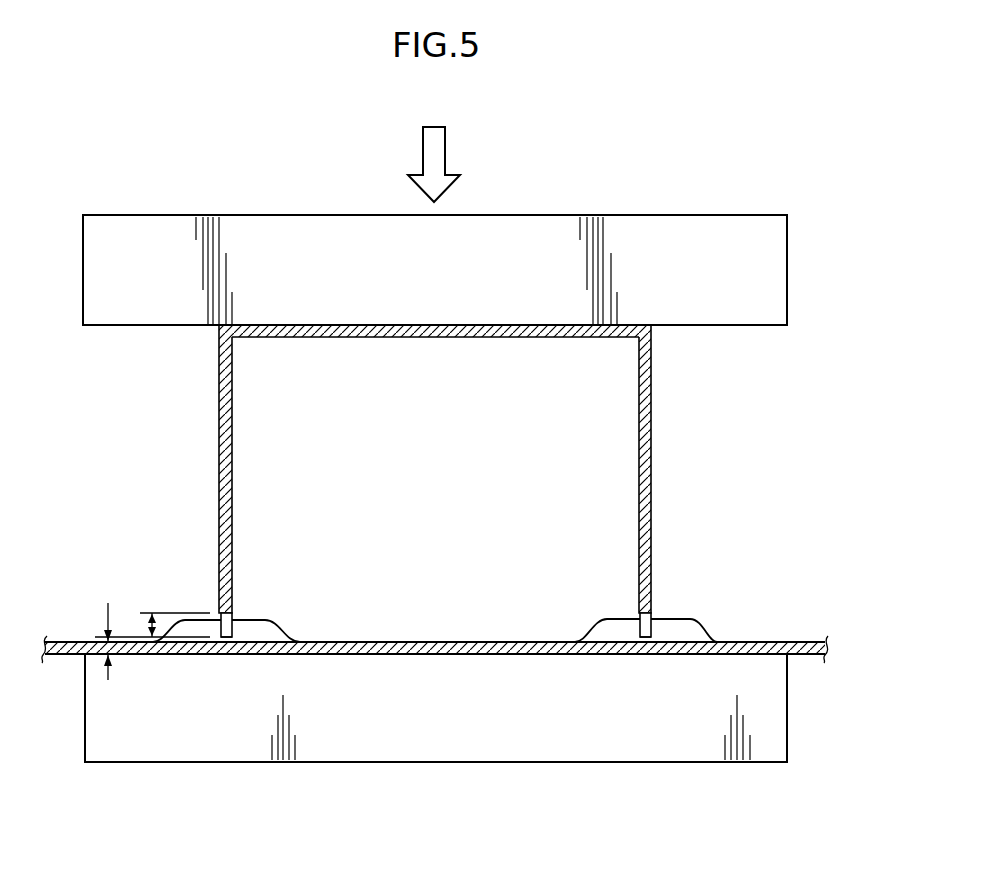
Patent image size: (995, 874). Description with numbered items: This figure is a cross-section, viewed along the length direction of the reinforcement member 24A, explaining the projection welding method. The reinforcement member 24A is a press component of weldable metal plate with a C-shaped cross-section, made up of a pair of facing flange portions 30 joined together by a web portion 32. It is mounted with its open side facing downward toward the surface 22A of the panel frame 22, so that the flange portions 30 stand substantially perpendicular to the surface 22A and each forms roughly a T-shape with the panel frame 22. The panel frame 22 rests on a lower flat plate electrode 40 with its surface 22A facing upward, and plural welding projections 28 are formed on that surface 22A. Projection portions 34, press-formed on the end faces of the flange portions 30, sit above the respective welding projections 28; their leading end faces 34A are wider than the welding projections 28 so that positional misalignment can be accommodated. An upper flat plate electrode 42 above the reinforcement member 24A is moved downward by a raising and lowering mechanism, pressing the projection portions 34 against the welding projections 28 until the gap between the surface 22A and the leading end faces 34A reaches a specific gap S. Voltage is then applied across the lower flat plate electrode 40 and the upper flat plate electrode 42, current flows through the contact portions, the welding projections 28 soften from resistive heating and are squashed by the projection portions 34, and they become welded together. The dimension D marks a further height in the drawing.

The upper flat plate electrode 42 is at (658, 214).
The web portion 32 is at (443, 338).
The flange portions 30 is at (207, 461).
The reinforcement member 24A is at (746, 393).
The welding projections 28 is at (265, 622).
The projection portions 34 is at (233, 628).
The leading end faces 34A is at (226, 656).
The panel frame 22 is at (396, 638).
The surface 22A is at (458, 641).
The lower flat plate electrode 40 is at (584, 762).
The height dimension D is at (150, 627).
The specific gap S is at (110, 676).